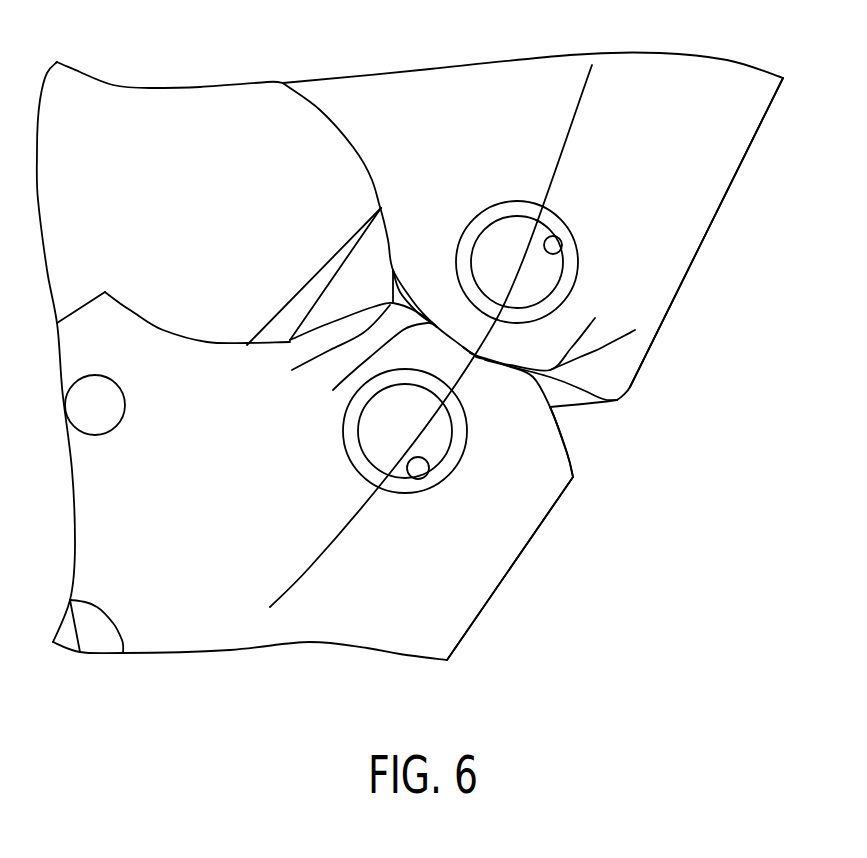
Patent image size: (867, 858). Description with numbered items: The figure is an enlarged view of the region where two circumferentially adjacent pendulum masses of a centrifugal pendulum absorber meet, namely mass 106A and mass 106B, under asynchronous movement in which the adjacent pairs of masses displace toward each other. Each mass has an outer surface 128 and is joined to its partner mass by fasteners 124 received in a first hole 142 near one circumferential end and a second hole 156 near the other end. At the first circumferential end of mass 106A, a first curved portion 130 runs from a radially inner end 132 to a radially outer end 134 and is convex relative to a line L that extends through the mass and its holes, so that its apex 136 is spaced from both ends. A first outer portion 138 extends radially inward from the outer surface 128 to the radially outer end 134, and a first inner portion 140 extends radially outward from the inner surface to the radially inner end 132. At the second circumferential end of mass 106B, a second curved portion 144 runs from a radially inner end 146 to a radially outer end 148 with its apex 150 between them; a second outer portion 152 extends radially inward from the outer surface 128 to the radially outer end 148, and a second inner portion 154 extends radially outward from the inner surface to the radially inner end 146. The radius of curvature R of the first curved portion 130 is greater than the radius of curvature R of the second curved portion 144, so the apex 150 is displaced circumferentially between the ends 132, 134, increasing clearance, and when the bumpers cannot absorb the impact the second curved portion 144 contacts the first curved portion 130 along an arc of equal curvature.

The mass 106A is at (238, 632).
The mass 106B is at (712, 88).
The fastener 124 is at (552, 235).
The outer surface 128 is at (713, 230).
The first curved portion 130 is at (369, 364).
The radially inner end 132 is at (349, 344).
The radially outer end 134 is at (533, 377).
The apex 136 is at (483, 353).
The first outer portion 138 is at (563, 450).
The first inner portion 140 is at (190, 340).
The first hole 142 is at (360, 443).
The second curved portion 144 is at (541, 327).
The radially inner end 146 is at (412, 283).
The radially outer end 148 is at (599, 335).
The apex 150 is at (476, 355).
The second outer portion 152 is at (642, 362).
The second inner portion 154 is at (353, 147).
The second hole 156 is at (495, 218).
The line L is at (577, 123).
The radius of curvature R is at (487, 366).